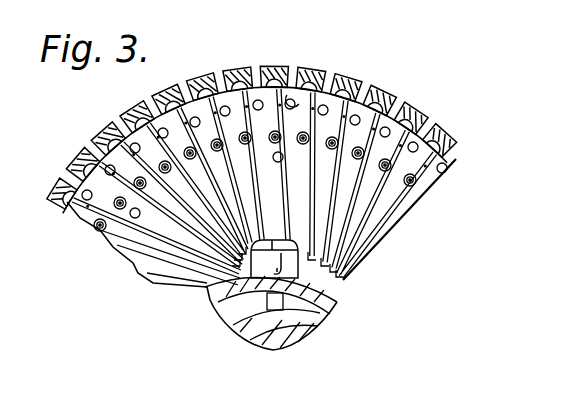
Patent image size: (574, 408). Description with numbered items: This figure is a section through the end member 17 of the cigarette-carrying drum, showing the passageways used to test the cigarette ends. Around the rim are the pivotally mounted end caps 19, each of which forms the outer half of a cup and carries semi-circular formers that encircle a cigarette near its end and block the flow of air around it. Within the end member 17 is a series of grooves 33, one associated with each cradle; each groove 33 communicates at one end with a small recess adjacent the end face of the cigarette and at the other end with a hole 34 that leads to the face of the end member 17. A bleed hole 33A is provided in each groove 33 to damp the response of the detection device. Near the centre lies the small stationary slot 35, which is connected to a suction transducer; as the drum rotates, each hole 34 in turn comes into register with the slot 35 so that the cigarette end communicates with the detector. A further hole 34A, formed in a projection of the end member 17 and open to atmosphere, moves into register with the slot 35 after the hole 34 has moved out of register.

The end member 17 is at (403, 213).
The end cap 19 is at (416, 124).
The groove 33 is at (143, 268).
The bleed hole 33A is at (294, 96).
The hole 34 is at (332, 290).
The hole 34A is at (343, 273).
The slot 35 is at (316, 331).